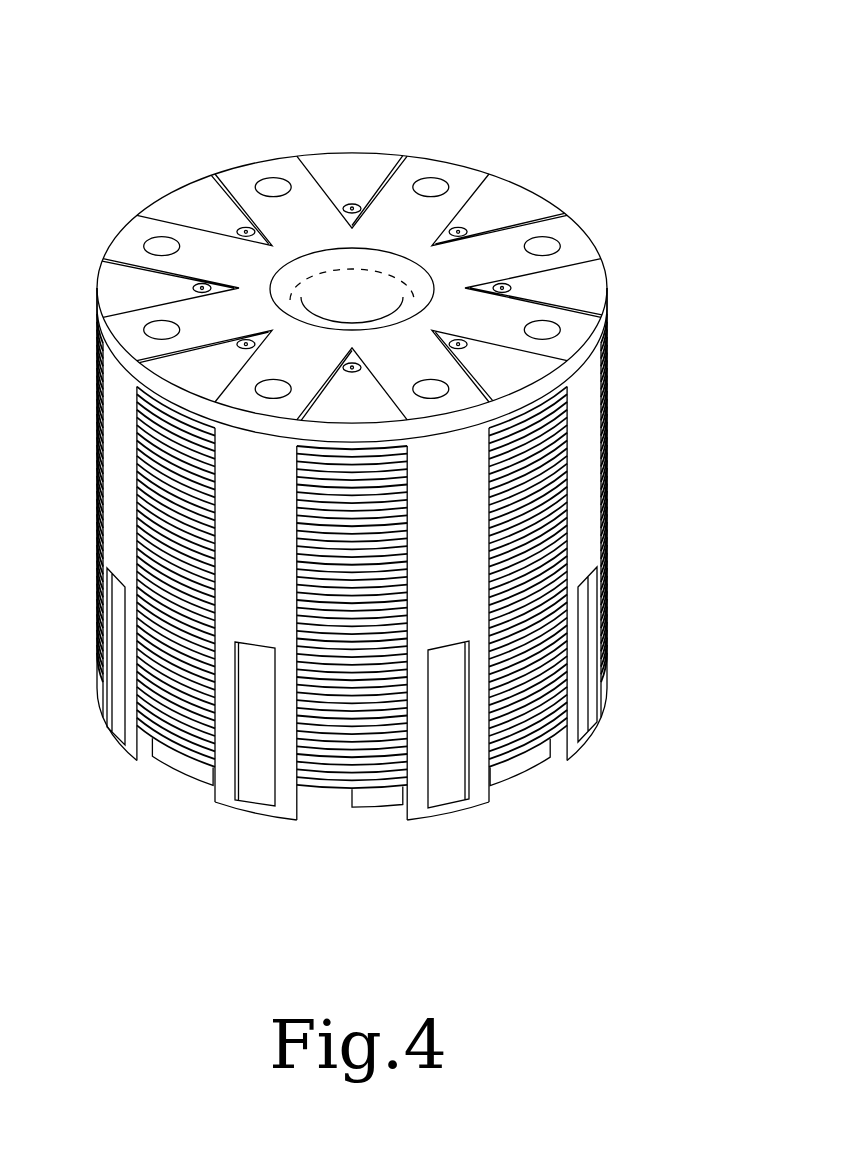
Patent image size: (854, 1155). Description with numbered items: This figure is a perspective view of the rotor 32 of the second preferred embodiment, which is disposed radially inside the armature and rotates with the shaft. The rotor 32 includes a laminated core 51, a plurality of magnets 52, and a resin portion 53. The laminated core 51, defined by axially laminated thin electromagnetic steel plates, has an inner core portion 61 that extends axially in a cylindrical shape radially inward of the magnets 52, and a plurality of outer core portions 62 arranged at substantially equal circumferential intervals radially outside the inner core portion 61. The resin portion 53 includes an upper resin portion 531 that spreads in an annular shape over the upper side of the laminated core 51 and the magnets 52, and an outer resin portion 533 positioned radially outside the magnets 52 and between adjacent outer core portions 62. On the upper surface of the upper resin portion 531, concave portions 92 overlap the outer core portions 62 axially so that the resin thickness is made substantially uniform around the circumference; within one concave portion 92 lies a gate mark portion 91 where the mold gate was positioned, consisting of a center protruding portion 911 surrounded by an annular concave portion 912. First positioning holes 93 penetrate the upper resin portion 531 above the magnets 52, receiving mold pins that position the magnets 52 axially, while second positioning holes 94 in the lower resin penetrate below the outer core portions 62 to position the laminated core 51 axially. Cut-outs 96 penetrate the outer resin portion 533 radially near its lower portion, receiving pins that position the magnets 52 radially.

The rotor 32 is at (304, 97).
The resin portion 53 is at (96, 231).
The upper resin portion 531 is at (203, 250).
The outer resin portion 533 is at (583, 440).
The concave portion 92 is at (356, 180).
The first positioning hole 93 is at (262, 177).
The gate mark portion 91 is at (531, 158).
The center protruding portion 911 is at (470, 348).
The annular concave portion 912 is at (500, 293).
The inner core portion 61 is at (400, 300).
The laminated core 51 is at (155, 696).
The outer core portion 62 is at (533, 705).
The second positioning hole 94 is at (386, 807).
The magnet 52 is at (262, 748).
The cut-out 96 is at (460, 743).